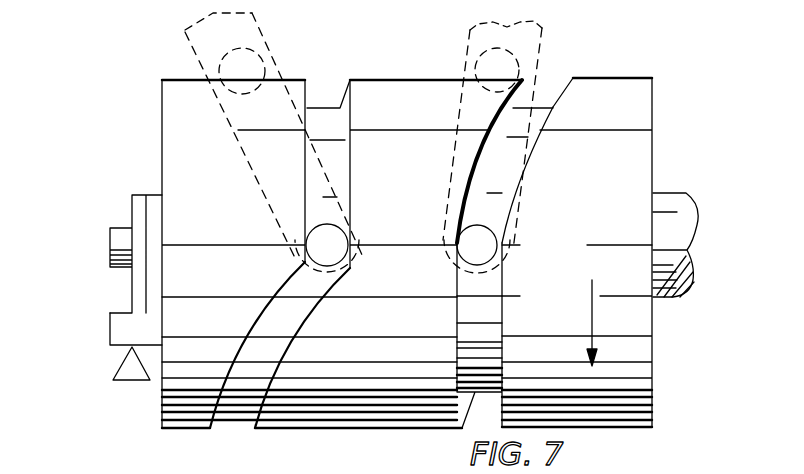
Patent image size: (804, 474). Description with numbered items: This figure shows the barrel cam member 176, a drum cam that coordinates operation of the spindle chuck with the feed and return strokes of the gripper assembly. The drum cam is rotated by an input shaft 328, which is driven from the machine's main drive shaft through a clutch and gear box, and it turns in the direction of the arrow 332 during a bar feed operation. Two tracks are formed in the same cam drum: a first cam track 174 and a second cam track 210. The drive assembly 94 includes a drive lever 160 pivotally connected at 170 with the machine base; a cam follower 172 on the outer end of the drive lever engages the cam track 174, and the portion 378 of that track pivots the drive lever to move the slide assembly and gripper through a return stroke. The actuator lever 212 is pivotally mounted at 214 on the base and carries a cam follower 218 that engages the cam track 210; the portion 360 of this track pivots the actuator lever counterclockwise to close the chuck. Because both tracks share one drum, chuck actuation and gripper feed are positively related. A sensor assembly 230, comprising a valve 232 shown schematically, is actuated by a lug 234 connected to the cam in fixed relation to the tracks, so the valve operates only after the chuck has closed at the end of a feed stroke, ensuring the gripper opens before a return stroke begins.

The drive assembly 94 is at (642, 130).
The drive lever 160 is at (467, 48).
The pivotal connection 170 is at (550, 42).
The cam follower 172 is at (486, 245).
The cam track 174 is at (470, 333).
The barrel cam member 176 is at (633, 238).
The cam track 210 is at (263, 345).
The actuator lever 212 is at (190, 30).
The pivotal mounting 214 is at (222, 64).
The cam follower 218 is at (327, 245).
The sensor assembly 230 is at (106, 365).
The valve 232 is at (130, 370).
The lug 234 is at (110, 318).
The input shaft 328 is at (670, 203).
The arrow 332 is at (590, 300).
The cam track portion 360 is at (283, 352).
The cam track portion 378 is at (566, 96).